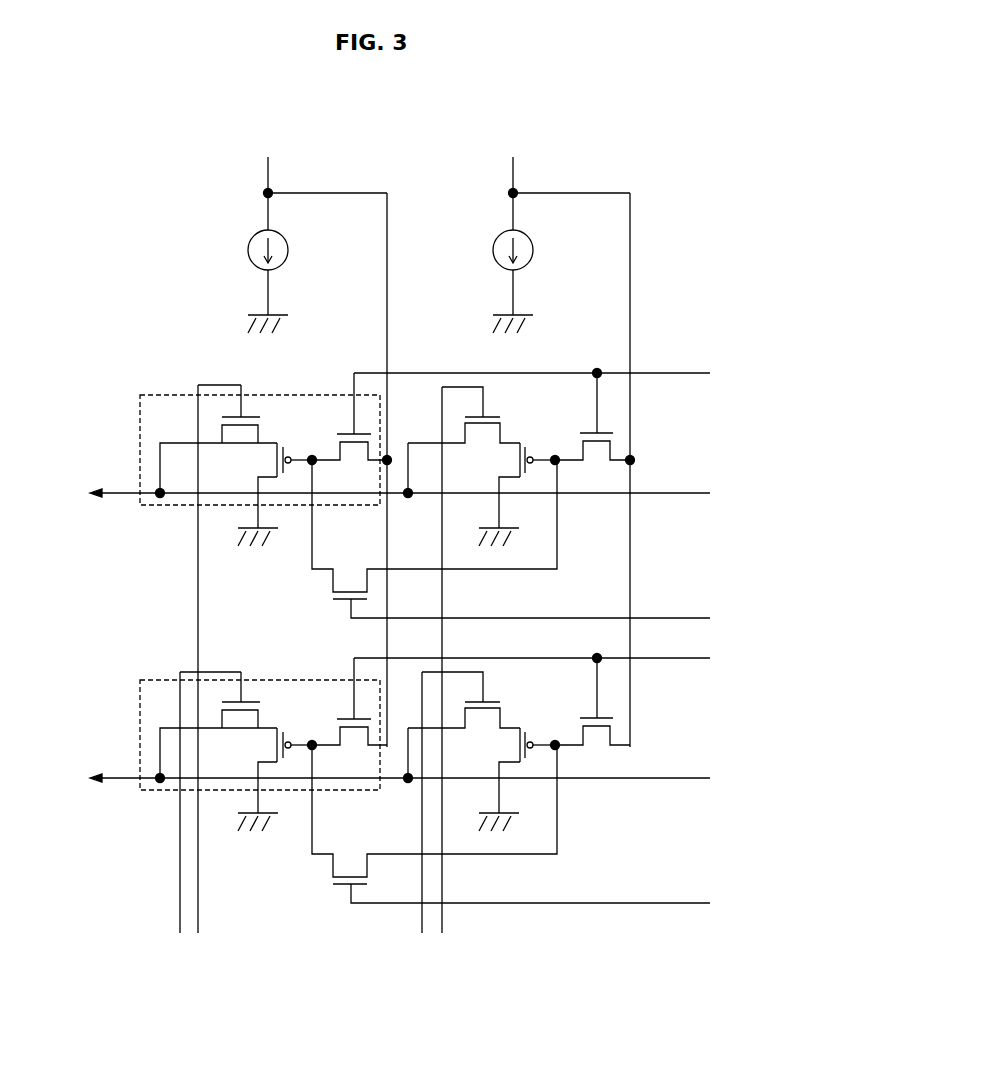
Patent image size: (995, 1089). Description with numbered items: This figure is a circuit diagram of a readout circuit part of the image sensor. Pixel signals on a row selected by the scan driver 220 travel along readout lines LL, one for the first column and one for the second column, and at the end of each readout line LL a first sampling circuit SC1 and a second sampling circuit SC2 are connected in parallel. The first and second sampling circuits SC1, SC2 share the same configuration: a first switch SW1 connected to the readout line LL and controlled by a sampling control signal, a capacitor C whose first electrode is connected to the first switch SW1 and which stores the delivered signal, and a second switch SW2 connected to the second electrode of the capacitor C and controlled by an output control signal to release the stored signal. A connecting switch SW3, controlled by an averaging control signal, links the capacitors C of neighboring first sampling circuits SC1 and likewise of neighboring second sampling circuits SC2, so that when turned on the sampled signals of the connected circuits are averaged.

The scan driver 220 is at (382, 1061).
The readout line LL is at (268, 170).
The first sampling circuit SC1 is at (154, 395).
The second sampling circuit SC2 is at (400, 752).
The first switch SW1 is at (511, 426).
The second switch SW2 is at (371, 424).
The connecting switch SW3 is at (511, 539).
The capacitor C is at (396, 494).